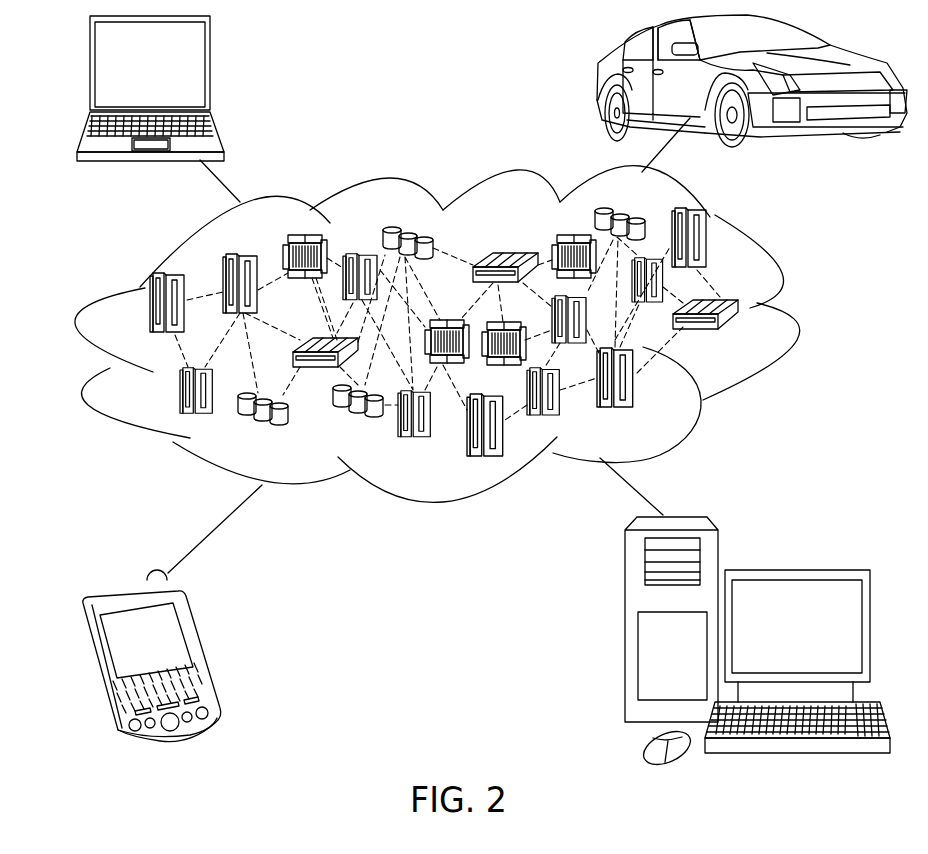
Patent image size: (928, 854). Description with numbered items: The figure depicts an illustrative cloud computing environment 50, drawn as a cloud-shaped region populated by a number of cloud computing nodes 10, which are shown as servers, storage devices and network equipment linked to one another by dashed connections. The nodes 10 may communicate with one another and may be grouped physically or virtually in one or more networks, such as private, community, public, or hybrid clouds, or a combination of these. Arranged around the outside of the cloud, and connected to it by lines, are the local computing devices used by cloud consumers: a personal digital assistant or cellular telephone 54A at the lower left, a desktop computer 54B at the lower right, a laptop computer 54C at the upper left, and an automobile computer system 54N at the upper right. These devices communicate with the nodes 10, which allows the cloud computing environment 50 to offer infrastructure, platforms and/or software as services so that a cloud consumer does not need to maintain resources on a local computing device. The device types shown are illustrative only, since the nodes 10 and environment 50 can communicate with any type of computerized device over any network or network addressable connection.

The cloud computing node 10 is at (750, 344).
The cloud computing environment 50 is at (461, 334).
The personal digital assistant or cellular telephone 54A is at (200, 650).
The desktop computer 54B is at (793, 570).
The laptop computer 54C is at (213, 72).
The automobile computer system 54N is at (600, 83).